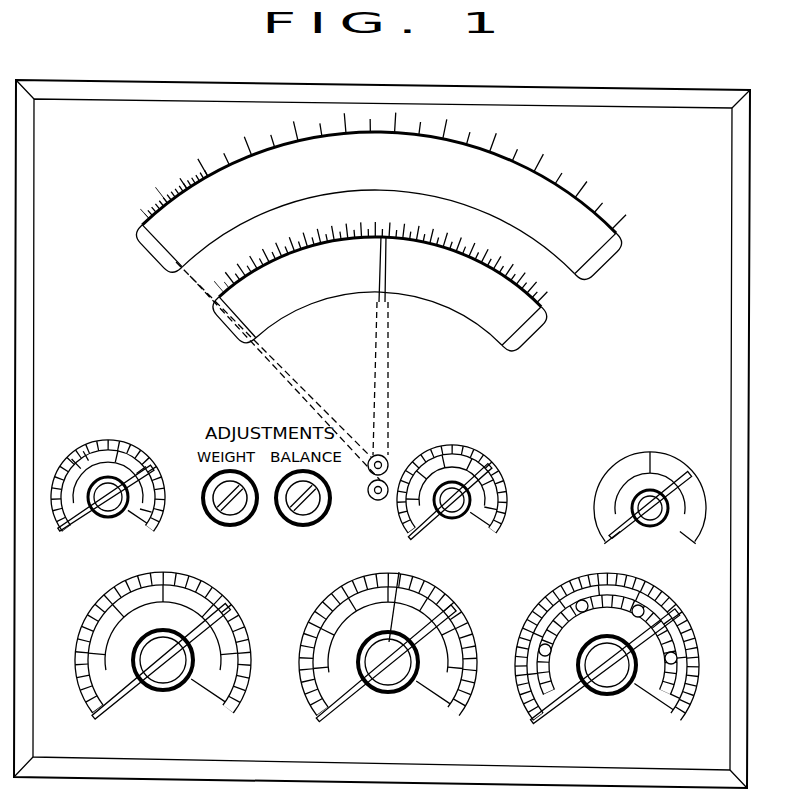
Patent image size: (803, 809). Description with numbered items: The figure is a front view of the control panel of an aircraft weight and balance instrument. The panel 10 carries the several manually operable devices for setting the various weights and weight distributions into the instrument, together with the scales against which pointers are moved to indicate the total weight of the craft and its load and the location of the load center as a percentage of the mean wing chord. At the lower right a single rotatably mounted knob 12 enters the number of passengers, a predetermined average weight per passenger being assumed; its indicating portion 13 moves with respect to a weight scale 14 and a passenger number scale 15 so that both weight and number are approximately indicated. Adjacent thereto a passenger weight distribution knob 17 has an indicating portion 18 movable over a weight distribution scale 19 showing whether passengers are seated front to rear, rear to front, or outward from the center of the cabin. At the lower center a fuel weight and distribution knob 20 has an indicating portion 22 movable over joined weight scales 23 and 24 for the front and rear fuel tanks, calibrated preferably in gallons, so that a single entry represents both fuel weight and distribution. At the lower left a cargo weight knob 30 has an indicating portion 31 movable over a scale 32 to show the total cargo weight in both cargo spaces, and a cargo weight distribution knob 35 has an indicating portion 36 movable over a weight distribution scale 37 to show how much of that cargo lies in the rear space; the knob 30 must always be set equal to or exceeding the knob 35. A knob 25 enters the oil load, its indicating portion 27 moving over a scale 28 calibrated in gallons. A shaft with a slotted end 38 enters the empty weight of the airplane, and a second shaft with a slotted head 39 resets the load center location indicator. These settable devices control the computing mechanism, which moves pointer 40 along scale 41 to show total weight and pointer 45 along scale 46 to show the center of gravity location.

The panel 10 is at (667, 97).
The scale 41 is at (152, 205).
The pointer 40 is at (178, 256).
The scale 46 is at (262, 272).
The pointer 45 is at (378, 292).
The indicating portion 27 is at (396, 521).
The slotted end 38 is at (238, 519).
The slotted head 39 is at (302, 519).
The indicating portion 36 is at (60, 462).
The weight distribution scale 37 is at (122, 445).
The cargo weight distribution knob 35 is at (152, 458).
The knob 25 is at (426, 462).
The scale 28 is at (468, 452).
The weight distribution scale 19 is at (648, 460).
The passenger weight distribution knob 17 is at (622, 482).
The indicating portion 18 is at (608, 510).
The scale 32 is at (80, 690).
The cargo weight knob 30 is at (166, 640).
The indicating portion 31 is at (128, 692).
The weight scale 23 is at (306, 702).
The fuel weight and distribution knob 20 is at (398, 690).
The indicating portion 22 is at (346, 697).
The weight scale 24 is at (452, 602).
The weight scale 14 is at (527, 706).
The passenger number scale 15 is at (552, 648).
The knob 12 is at (620, 686).
The indicating portion 13 is at (563, 700).